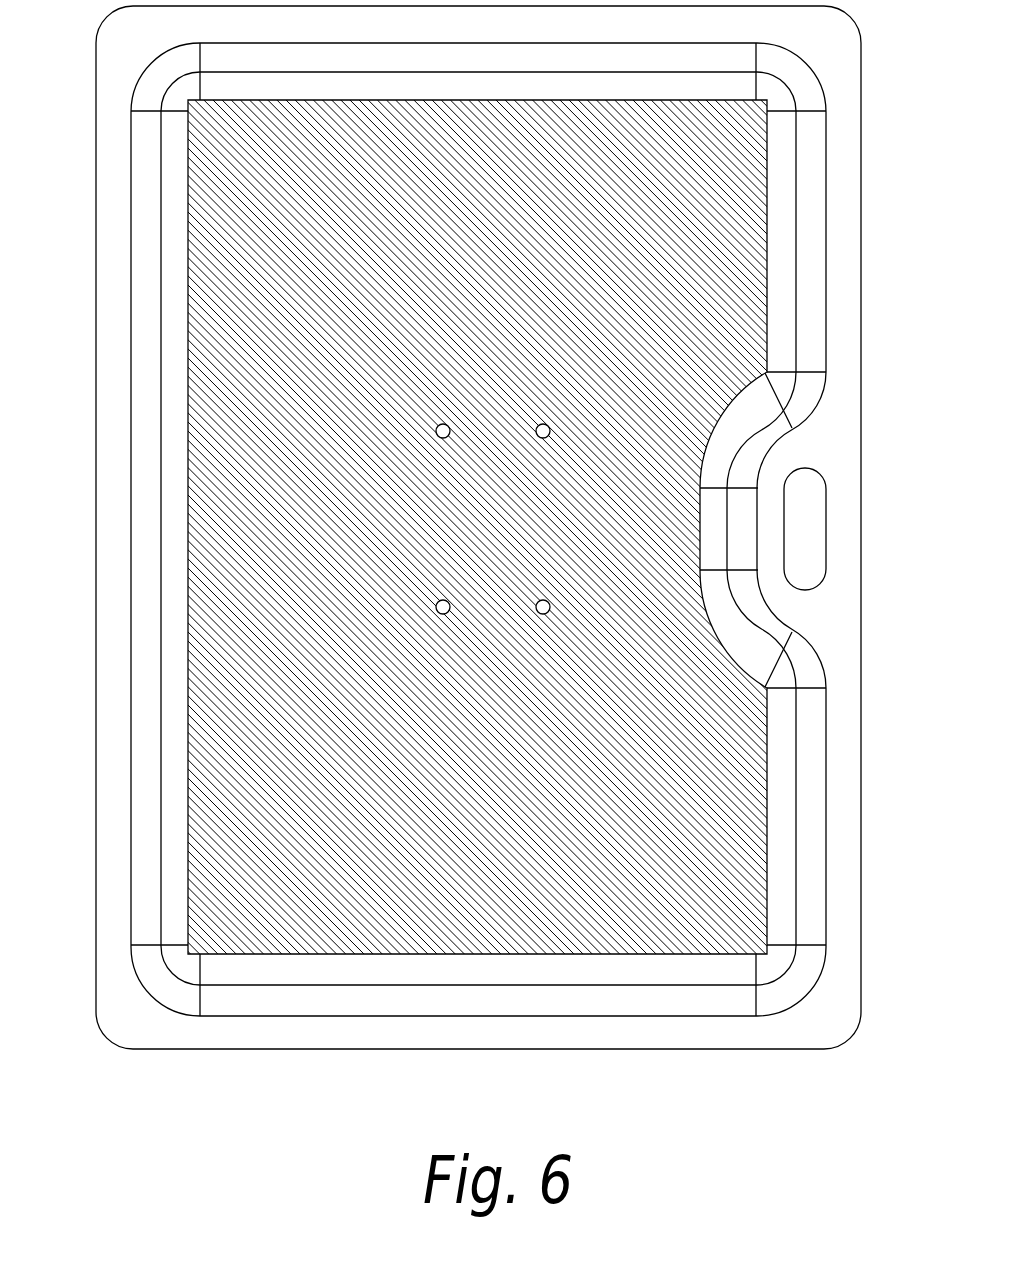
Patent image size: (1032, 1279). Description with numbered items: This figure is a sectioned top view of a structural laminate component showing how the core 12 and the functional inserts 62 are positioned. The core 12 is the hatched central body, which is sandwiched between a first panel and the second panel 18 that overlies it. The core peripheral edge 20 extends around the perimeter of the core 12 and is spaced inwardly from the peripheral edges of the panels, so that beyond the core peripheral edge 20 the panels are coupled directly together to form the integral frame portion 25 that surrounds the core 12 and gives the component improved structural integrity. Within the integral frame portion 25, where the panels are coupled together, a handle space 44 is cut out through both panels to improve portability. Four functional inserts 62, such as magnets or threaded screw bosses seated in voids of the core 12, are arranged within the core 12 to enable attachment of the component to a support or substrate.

The core 12 is at (277, 638).
The second panel 18 is at (177, 318).
The core peripheral edge 20 is at (188, 773).
The integral frame portion 25 is at (115, 138).
The handle space 44 is at (802, 492).
The functional insert 62 is at (430, 422).